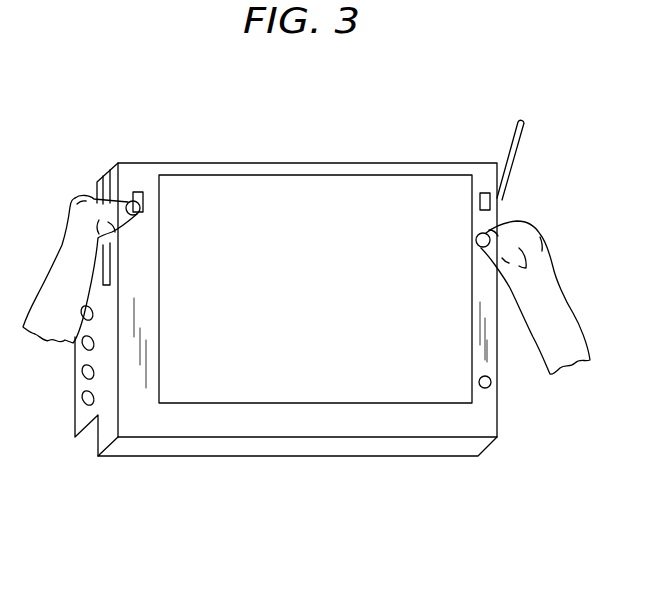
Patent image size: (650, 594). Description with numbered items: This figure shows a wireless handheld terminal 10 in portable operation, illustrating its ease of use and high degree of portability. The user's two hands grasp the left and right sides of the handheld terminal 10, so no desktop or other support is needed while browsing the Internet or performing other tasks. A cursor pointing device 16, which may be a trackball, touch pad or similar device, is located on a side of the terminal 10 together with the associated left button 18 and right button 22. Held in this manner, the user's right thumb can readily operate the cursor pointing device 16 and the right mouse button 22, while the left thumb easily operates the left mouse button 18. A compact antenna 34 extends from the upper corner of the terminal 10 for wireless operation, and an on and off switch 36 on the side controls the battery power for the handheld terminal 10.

The wireless handheld terminal 10 is at (238, 420).
The cursor pointing device 16 is at (505, 222).
The left button 18 is at (137, 192).
The right button 22 is at (493, 202).
The compact antenna 34 is at (510, 142).
The on and off switch 36 is at (485, 388).